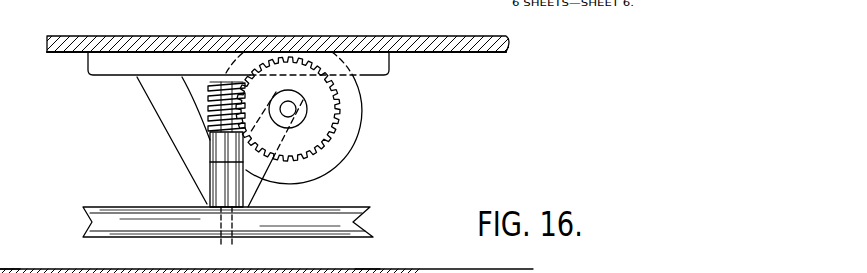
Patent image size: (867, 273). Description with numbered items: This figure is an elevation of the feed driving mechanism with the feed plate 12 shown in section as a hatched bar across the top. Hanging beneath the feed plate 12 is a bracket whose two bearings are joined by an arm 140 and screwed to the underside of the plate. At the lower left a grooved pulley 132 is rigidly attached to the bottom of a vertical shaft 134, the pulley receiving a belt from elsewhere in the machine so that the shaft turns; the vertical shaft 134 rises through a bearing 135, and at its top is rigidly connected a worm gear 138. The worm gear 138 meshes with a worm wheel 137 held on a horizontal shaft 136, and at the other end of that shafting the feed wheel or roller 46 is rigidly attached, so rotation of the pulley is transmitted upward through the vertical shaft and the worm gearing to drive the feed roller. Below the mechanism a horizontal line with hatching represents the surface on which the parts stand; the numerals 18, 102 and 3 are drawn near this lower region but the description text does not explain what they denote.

The feed plate 12 is at (512, 46).
The arm 140 is at (144, 67).
The horizontal shaft 136 is at (207, 107).
The bearing 135 is at (217, 180).
The vertical shaft 134 is at (225, 232).
The worm gear 138 is at (290, 108).
The feed wheel or roller 46 is at (357, 123).
The worm wheel 137 is at (310, 138).
The grooved pulley 132 is at (370, 206).
The track 18 is at (320, 269).
The rail 102 is at (362, 270).
The support 3 is at (10, 268).